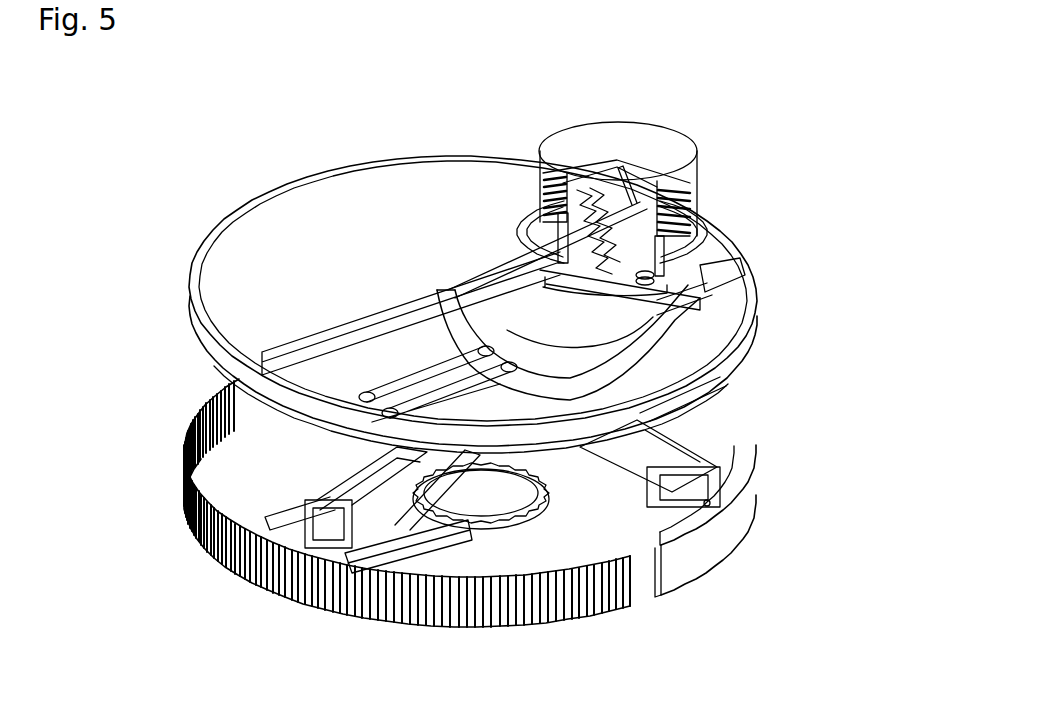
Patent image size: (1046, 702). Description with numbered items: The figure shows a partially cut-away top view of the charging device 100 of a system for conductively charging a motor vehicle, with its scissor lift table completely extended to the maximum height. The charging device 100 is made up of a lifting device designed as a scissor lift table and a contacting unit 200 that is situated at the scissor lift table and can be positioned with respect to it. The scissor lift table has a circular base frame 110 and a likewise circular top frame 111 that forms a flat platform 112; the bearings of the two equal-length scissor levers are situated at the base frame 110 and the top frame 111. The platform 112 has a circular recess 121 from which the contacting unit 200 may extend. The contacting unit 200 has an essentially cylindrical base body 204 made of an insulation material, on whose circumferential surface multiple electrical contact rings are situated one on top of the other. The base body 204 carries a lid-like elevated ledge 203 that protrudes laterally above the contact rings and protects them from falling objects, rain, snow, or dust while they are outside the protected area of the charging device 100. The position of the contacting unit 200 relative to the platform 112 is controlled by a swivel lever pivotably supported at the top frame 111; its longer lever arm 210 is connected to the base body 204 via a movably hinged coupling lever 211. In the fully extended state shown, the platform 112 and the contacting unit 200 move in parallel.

The charging device 100 is at (168, 382).
The base frame 110 is at (703, 550).
The top frame 111 is at (710, 380).
The platform 112 is at (278, 243).
The circular recess 121 is at (527, 217).
The contacting unit 200 is at (705, 203).
The elevated ledge 203 is at (633, 133).
The base body 204 is at (675, 238).
The longer lever arm 210 is at (690, 282).
The coupling lever 211 is at (635, 168).